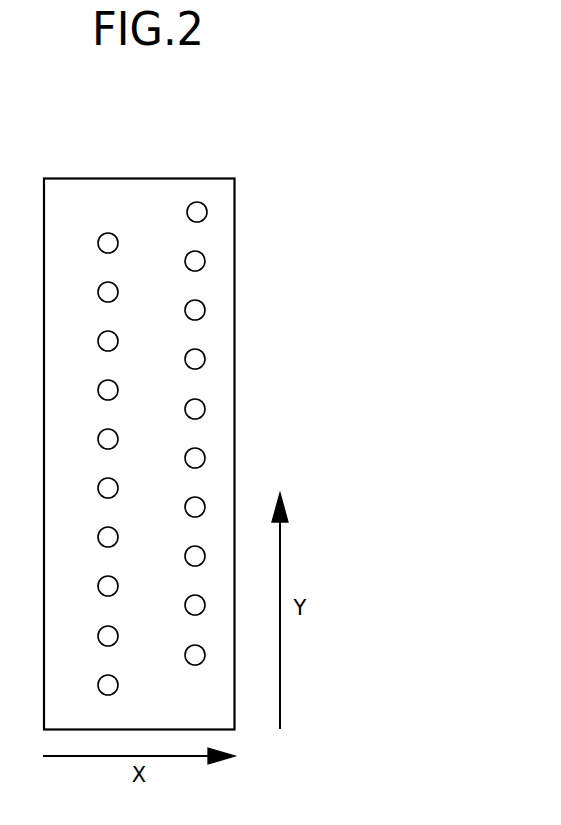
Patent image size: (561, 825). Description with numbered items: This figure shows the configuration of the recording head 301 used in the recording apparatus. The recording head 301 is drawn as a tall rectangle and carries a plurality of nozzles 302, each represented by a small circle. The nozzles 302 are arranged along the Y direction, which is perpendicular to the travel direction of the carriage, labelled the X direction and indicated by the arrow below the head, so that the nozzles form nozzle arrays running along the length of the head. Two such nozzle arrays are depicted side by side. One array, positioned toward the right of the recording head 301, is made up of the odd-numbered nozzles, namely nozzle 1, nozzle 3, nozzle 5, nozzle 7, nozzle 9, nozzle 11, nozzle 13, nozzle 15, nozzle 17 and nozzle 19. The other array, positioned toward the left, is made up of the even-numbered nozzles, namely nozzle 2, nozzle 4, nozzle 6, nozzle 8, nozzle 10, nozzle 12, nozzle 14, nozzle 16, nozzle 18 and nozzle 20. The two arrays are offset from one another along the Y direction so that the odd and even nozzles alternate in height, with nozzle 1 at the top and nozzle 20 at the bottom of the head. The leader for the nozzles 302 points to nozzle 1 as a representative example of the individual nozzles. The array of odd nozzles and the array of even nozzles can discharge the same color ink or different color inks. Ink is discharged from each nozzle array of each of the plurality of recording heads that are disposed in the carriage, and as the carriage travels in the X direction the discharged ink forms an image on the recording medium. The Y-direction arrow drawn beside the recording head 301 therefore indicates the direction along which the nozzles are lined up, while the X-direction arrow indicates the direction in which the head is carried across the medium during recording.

The recording head 301 is at (87, 178).
The nozzles 302 is at (198, 213).
The nozzle n1 1 is at (165, 212).
The nozzle n2 2 is at (93, 243).
The nozzle n3 3 is at (180, 261).
The nozzle n4 4 is at (93, 292).
The nozzle n5 5 is at (180, 310).
The nozzle n6 6 is at (93, 341).
The nozzle n7 7 is at (180, 359).
The nozzle n8 8 is at (93, 390).
The nozzle n9 9 is at (180, 409).
The nozzle n10 10 is at (86, 439).
The nozzle n11 11 is at (173, 458).
The nozzle n12 12 is at (86, 488).
The nozzle n13 13 is at (173, 507).
The nozzle n14 14 is at (86, 537).
The nozzle n15 15 is at (173, 556).
The nozzle n16 16 is at (86, 586).
The nozzle n17 17 is at (173, 605).
The nozzle n18 18 is at (86, 636).
The nozzle n19 19 is at (173, 655).
The nozzle n20 20 is at (86, 685).